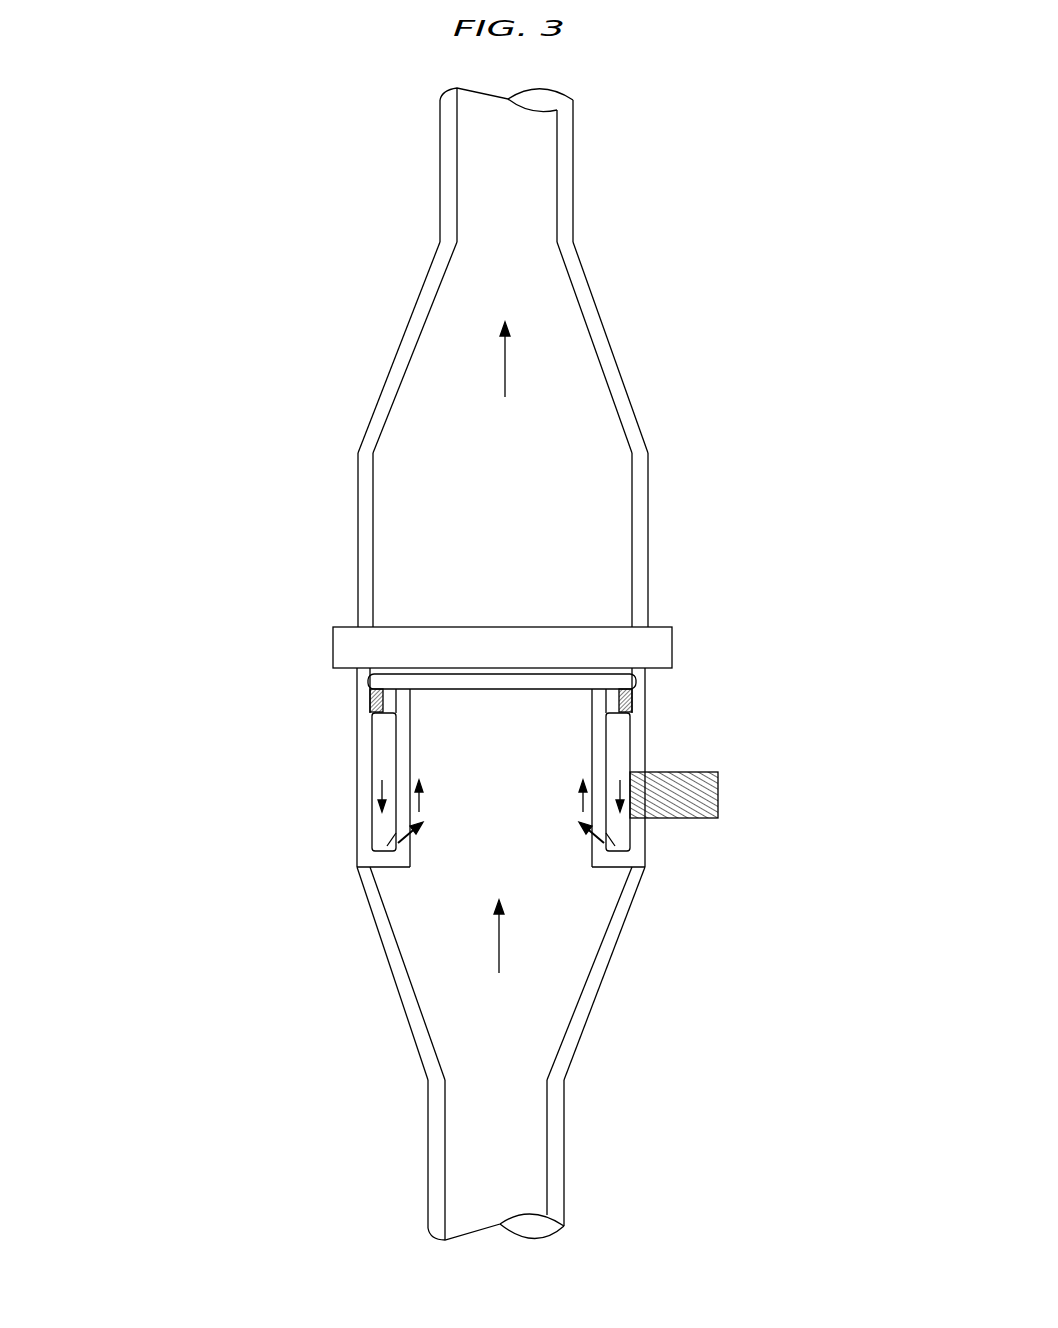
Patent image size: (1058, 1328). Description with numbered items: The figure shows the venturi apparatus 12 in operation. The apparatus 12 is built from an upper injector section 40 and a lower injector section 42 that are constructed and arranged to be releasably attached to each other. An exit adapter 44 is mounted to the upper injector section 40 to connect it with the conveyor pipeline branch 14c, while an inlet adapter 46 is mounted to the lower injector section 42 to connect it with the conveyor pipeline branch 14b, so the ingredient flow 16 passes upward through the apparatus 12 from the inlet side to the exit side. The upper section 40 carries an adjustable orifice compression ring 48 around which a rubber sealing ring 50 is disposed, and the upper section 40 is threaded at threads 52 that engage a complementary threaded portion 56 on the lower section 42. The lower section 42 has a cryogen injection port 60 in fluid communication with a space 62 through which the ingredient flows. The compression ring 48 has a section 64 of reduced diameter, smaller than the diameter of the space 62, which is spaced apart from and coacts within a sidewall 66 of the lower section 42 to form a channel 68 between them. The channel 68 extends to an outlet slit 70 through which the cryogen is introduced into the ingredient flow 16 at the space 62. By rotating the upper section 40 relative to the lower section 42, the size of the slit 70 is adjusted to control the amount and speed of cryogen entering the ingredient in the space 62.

The apparatus 12 is at (716, 262).
The conveyor pipeline branch 14c is at (440, 145).
The conveyor pipeline branch 14b is at (565, 1165).
The ingredient flow 16 is at (505, 365).
The upper injector section 40 is at (358, 510).
The lower injector section 42 is at (278, 811).
The exit adapter 44 is at (612, 345).
The inlet adapter 46 is at (612, 958).
The adjustable orifice compression ring 48 is at (672, 640).
The rubber sealing ring 50 is at (420, 678).
The threads 52 is at (372, 700).
The threaded portion 56 is at (632, 705).
The cryogen injection port 60 is at (692, 820).
The space 62 is at (513, 796).
The reduced diameter section 64 is at (618, 760).
The sidewall 66 is at (358, 750).
The channel 68 is at (382, 768).
The outlet slit 70 is at (385, 848).